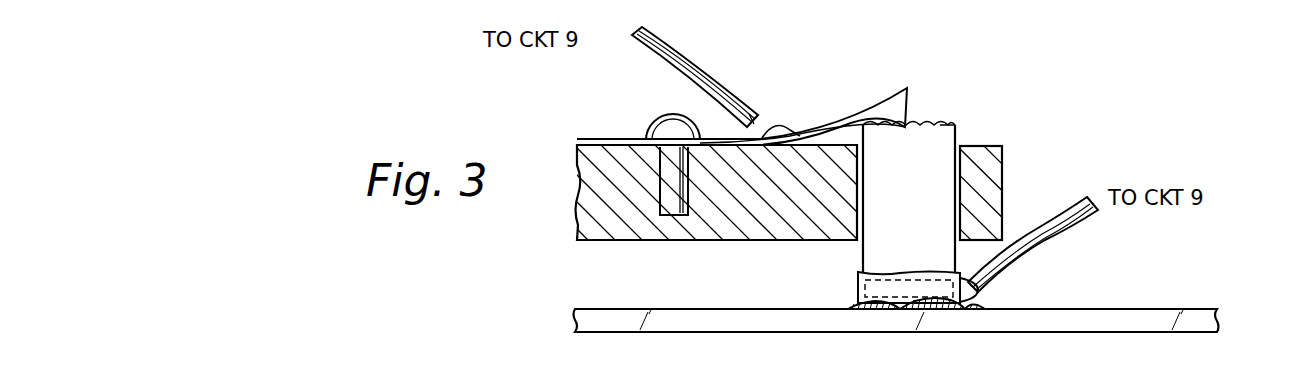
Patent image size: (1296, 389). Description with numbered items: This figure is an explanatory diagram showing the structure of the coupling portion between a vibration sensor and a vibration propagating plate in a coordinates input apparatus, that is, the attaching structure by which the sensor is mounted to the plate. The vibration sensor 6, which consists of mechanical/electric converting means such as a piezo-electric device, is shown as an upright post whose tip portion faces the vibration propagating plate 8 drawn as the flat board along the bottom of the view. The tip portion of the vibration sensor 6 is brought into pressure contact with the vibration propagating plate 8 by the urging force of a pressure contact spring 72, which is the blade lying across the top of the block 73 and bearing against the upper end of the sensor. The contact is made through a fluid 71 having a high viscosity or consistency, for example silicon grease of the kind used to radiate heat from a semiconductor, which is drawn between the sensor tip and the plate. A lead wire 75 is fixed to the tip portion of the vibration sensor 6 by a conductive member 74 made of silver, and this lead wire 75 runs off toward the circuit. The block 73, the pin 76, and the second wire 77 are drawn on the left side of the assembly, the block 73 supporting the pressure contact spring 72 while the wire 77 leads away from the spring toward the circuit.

The vibration sensor 6 is at (960, 128).
The vibration propagating plate 8 is at (705, 323).
The fluid 71 is at (875, 313).
The pressure contact spring 72 is at (832, 114).
The insulating block 73 is at (723, 230).
The conductive member 74 is at (987, 298).
The lead wire 75 is at (1057, 223).
The pin with dome head 76 is at (652, 120).
The wire to circuit 9 77 is at (715, 75).